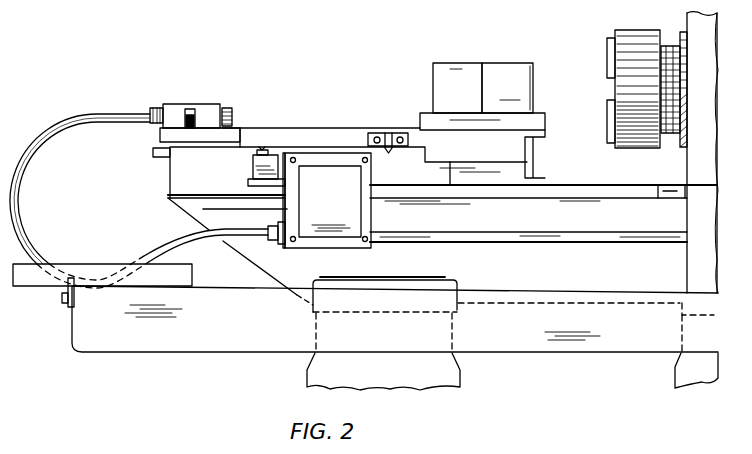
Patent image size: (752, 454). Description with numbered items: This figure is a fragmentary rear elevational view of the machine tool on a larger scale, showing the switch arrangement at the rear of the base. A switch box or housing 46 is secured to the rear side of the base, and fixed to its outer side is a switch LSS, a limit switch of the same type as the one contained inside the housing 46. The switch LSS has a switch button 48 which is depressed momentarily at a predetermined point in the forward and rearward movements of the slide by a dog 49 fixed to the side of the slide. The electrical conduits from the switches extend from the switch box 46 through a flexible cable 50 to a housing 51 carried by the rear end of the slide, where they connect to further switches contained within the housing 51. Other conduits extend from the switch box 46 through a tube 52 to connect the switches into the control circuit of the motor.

The housing 46 is at (328, 211).
The switch button 48 is at (261, 148).
The dog 49 is at (387, 132).
The flexible cable 50 is at (183, 244).
The housing 51 is at (203, 105).
The tube 52 is at (492, 233).
The switch LSS is at (253, 168).